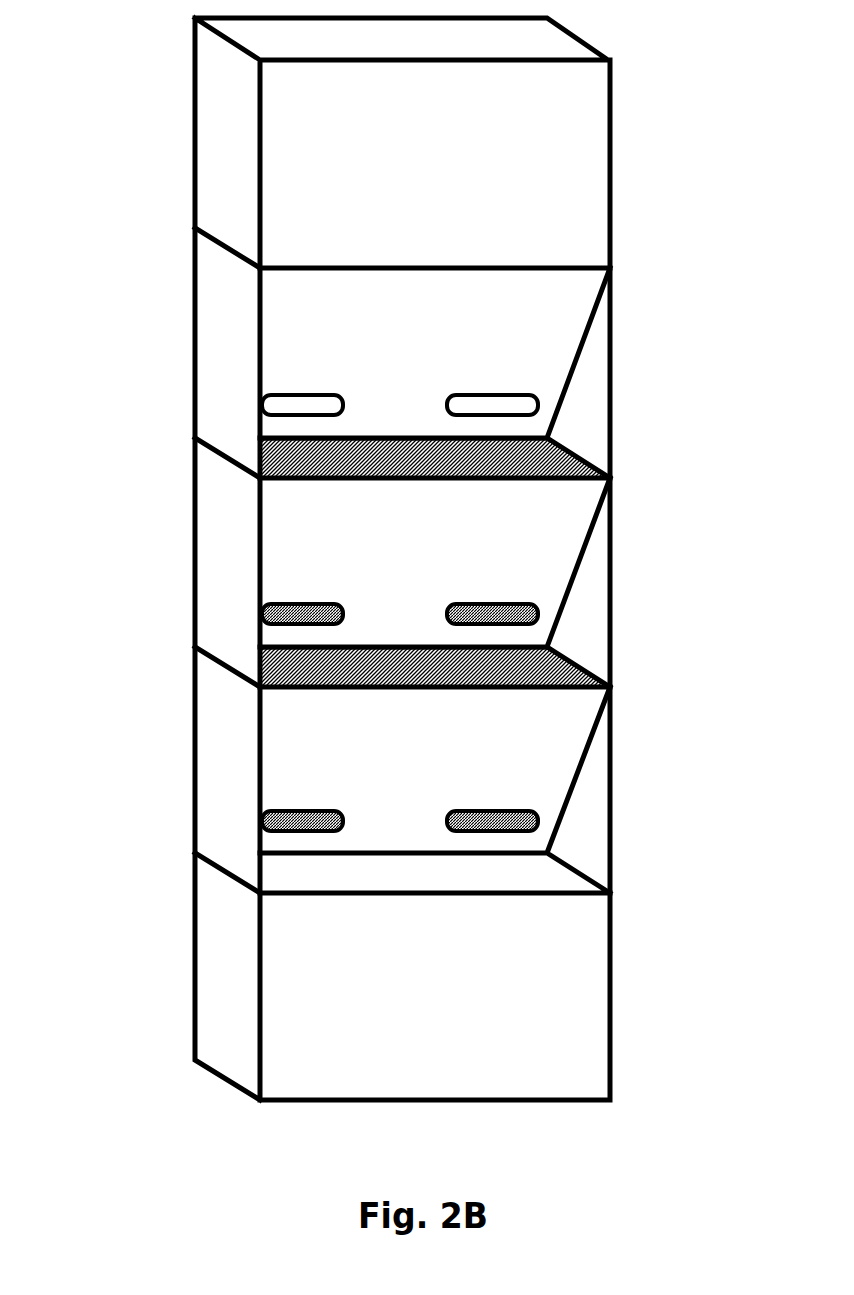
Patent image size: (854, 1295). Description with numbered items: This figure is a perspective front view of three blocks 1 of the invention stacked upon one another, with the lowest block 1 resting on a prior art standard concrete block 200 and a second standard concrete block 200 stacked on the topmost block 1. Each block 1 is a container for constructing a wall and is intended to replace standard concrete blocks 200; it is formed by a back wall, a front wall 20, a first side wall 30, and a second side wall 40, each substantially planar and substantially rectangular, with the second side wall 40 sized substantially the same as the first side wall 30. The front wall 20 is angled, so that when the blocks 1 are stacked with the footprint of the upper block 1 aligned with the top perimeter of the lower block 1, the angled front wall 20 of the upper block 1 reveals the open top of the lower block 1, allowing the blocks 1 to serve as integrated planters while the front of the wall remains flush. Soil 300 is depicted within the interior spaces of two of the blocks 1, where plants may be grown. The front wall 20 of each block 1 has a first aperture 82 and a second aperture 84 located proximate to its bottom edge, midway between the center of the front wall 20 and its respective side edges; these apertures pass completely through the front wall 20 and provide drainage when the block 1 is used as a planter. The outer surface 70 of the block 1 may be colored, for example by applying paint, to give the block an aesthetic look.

The standard concrete block 200 is at (195, 158).
The outer surface 70 is at (220, 298).
The front wall 20 is at (562, 533).
The soil 300 is at (578, 457).
The first aperture 82 is at (280, 406).
The second aperture 84 is at (527, 405).
The block 1 is at (192, 340).
The second side wall 40 is at (222, 745).
The first side wall 30 is at (587, 808).